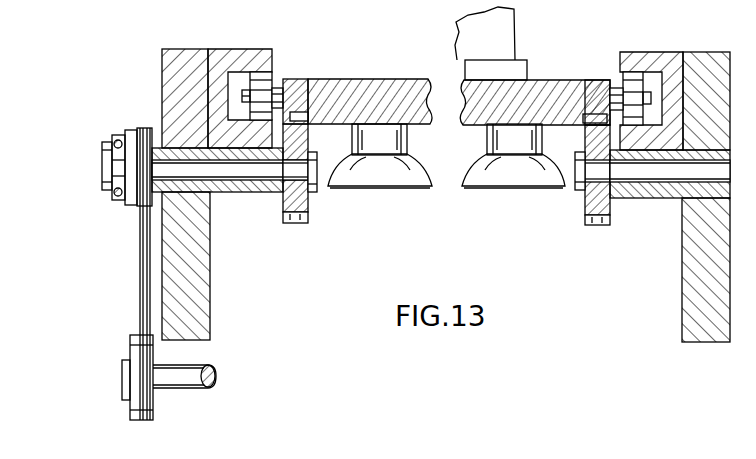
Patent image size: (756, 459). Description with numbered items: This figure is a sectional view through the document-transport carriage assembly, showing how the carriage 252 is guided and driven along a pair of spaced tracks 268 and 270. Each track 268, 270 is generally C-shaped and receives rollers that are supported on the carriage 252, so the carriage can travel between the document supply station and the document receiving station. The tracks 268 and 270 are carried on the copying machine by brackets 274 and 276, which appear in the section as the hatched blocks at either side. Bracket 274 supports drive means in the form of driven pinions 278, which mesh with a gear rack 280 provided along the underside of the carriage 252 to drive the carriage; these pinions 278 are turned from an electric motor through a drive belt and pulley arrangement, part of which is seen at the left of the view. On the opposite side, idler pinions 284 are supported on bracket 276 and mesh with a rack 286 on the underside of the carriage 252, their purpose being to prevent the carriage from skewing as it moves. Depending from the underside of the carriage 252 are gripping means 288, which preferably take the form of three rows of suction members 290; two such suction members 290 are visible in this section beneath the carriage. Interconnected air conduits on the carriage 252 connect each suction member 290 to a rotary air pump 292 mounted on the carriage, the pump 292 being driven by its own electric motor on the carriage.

The carriage 252 is at (428, 90).
The track 268 is at (272, 56).
The track 270 is at (676, 52).
The bracket 274 is at (211, 276).
The bracket 276 is at (684, 272).
The driven pinions 278 is at (308, 200).
The gear rack 280 is at (305, 116).
The idler pinions 284 is at (585, 205).
The rack 286 is at (592, 112).
The gripping means 288 is at (440, 116).
The suction members 290 is at (398, 180).
The rotary air pump 292 is at (507, 50).